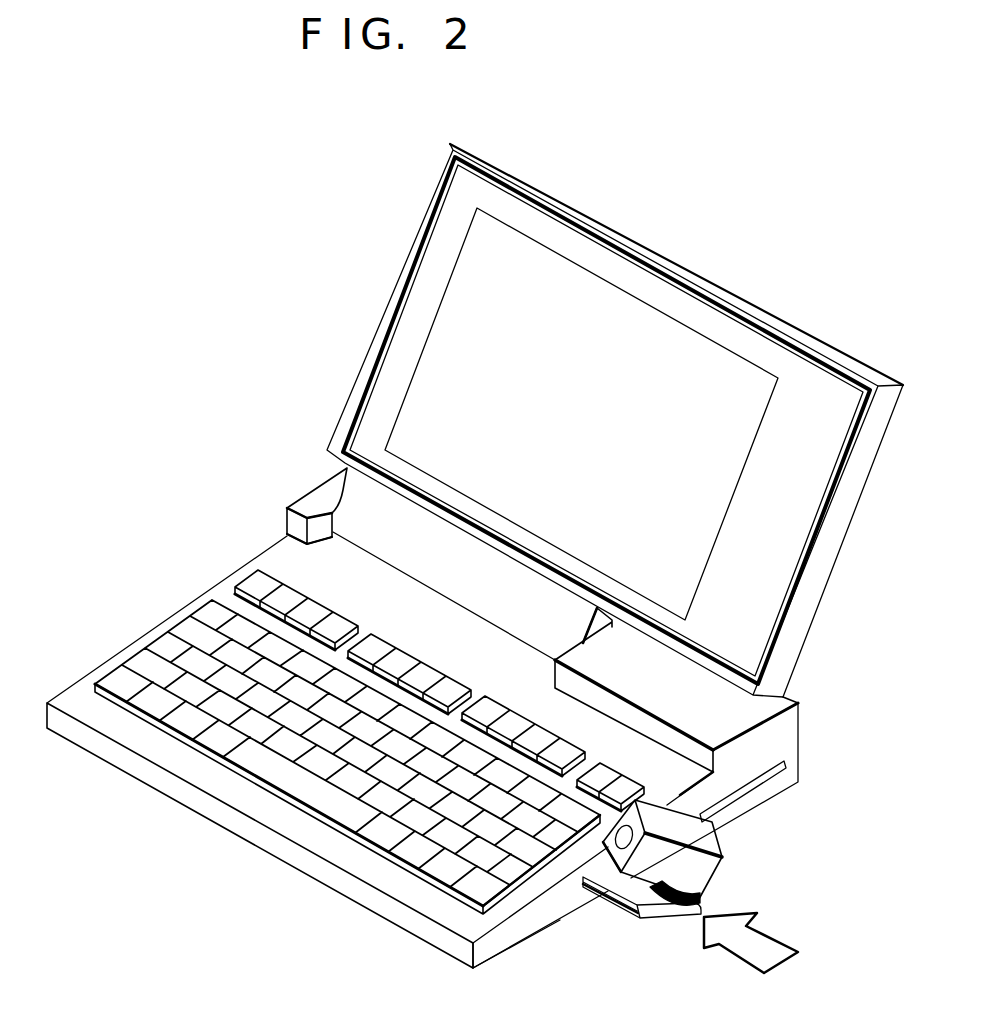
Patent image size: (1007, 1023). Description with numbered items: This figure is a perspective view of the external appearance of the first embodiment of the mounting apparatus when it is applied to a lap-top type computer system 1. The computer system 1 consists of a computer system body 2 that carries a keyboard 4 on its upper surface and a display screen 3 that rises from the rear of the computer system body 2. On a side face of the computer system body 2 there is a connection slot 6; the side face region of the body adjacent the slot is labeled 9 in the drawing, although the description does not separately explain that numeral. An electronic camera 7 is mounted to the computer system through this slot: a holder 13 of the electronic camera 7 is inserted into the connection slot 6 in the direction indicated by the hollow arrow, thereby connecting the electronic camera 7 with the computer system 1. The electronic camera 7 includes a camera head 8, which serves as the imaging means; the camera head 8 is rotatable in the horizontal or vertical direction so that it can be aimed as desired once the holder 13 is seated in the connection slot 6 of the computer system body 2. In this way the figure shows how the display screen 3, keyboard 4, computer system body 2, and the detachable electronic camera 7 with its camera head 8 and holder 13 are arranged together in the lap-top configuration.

The computer system 1 is at (292, 478).
The computer system body 2 is at (260, 835).
The display screen 3 is at (452, 360).
The keyboard 4 is at (228, 745).
The connection slot 6 is at (583, 882).
The electronic camera 7 is at (724, 844).
The camera head 8 is at (694, 877).
The side face of main body 9 is at (527, 925).
The holder 13 is at (641, 889).